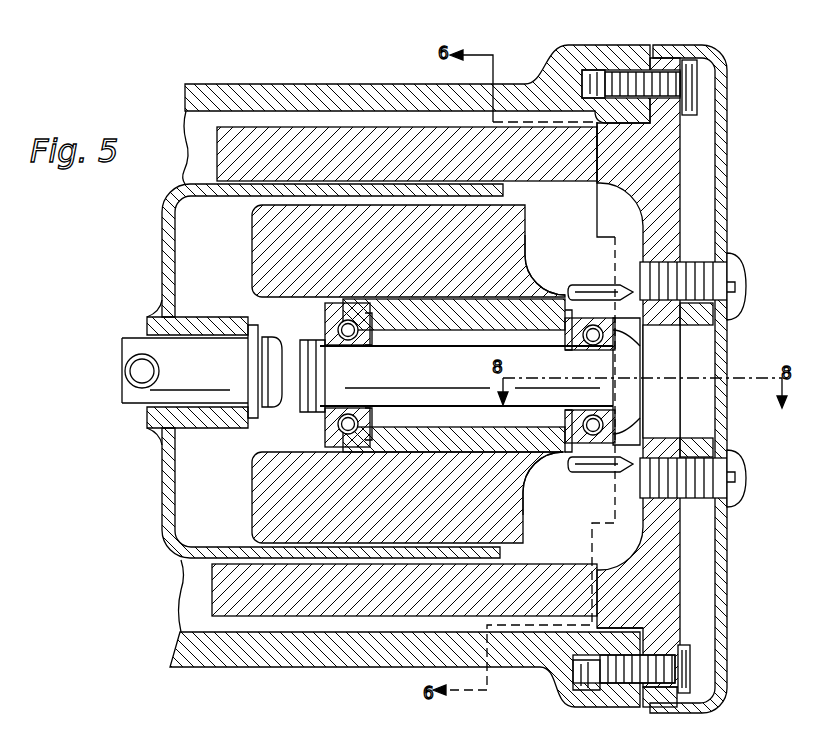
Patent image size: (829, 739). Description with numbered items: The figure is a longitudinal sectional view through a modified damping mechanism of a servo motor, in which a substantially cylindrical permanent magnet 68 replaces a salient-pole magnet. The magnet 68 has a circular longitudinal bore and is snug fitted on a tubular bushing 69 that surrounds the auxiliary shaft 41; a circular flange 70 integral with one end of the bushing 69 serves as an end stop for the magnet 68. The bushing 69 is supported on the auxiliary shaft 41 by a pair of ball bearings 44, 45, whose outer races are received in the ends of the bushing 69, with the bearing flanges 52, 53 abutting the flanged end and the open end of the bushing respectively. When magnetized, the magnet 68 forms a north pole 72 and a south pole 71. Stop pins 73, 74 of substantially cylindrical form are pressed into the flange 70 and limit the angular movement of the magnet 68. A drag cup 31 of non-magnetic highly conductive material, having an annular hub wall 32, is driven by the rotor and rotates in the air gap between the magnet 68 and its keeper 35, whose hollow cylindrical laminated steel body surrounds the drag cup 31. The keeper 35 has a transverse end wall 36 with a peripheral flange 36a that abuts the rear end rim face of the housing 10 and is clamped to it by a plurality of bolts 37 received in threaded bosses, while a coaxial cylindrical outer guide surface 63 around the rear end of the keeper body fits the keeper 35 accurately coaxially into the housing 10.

The housing 10 is at (322, 655).
The drag cup 31 is at (212, 552).
The annular hub wall 32 is at (161, 276).
The keeper 35 is at (395, 605).
The transverse end wall 36 is at (670, 186).
The peripheral flange 36a is at (655, 704).
The bolts 37 is at (692, 680).
The auxiliary shaft 41 is at (437, 372).
The ball bearing 44 is at (325, 433).
The ball bearing 45 is at (583, 410).
The ball bearing flange 52 is at (325, 312).
The ball bearing flange 53 is at (610, 325).
The cylindrical outer guide surface 63 is at (627, 628).
The permanent magnet 68 is at (252, 230).
The tubular bushing 69 is at (447, 422).
The circular flange 70 is at (576, 285).
The south pole 71 is at (512, 542).
The north pole 72 is at (513, 207).
The stop pin 73 is at (603, 472).
The stop pin 74 is at (612, 270).